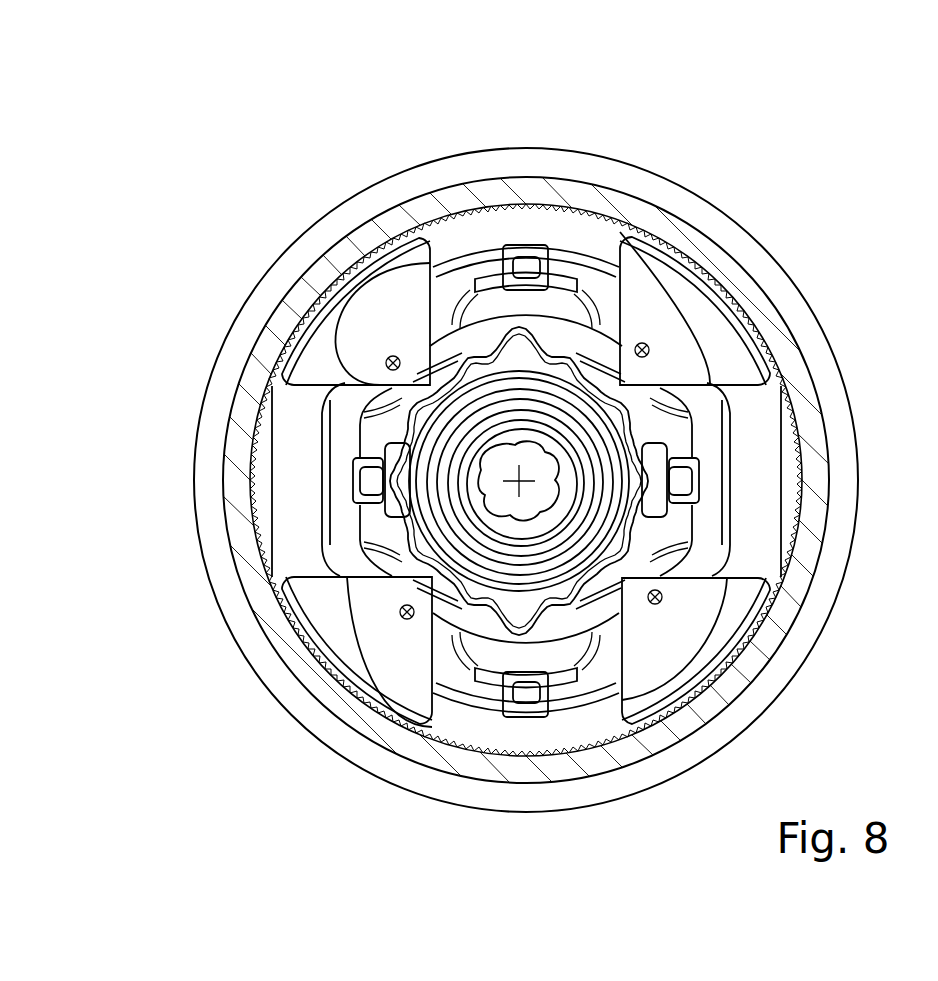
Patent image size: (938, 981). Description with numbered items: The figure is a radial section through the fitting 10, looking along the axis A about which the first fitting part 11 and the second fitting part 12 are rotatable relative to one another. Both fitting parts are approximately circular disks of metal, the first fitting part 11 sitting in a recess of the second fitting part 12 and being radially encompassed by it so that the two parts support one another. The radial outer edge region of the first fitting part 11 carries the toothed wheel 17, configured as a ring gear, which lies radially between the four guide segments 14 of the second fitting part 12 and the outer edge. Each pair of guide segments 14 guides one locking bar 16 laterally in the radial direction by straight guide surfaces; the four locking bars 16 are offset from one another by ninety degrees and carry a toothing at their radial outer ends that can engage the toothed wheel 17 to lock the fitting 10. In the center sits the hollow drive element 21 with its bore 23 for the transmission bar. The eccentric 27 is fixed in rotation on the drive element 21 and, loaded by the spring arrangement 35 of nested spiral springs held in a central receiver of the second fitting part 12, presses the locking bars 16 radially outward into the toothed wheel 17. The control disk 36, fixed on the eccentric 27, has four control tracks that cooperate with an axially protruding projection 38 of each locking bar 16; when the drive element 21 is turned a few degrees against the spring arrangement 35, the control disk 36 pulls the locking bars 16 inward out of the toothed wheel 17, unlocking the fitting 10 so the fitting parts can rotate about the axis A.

The fitting 10 is at (750, 168).
The first fitting part 11 is at (220, 384).
The second fitting part 12 is at (688, 174).
The guide segment 14 is at (305, 335).
The locking bar 16 is at (510, 228).
The toothed wheel 17 is at (263, 622).
The drive element 21 is at (505, 512).
The bore 23 is at (540, 473).
The eccentric 27 is at (405, 462).
The spring arrangement 35 is at (585, 545).
The control disk 36 is at (708, 625).
The projection 38 is at (512, 262).
The axis A is at (525, 483).